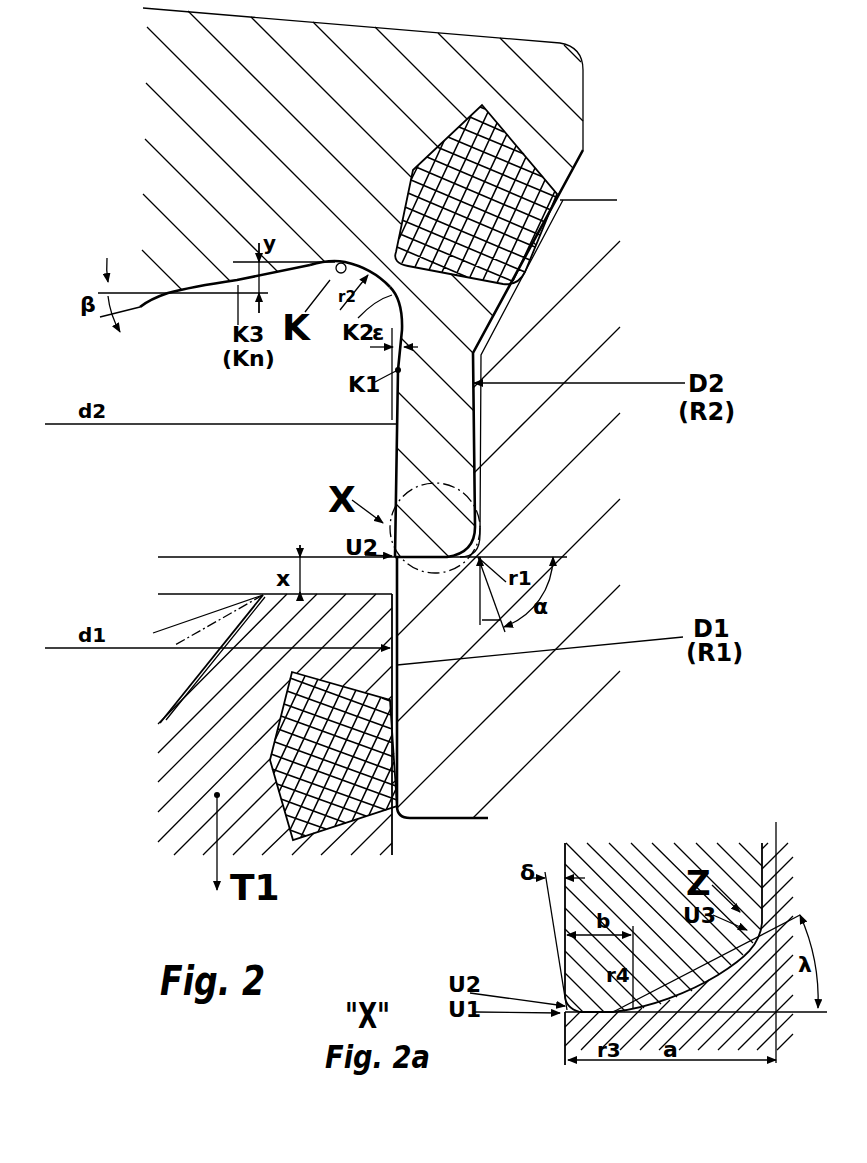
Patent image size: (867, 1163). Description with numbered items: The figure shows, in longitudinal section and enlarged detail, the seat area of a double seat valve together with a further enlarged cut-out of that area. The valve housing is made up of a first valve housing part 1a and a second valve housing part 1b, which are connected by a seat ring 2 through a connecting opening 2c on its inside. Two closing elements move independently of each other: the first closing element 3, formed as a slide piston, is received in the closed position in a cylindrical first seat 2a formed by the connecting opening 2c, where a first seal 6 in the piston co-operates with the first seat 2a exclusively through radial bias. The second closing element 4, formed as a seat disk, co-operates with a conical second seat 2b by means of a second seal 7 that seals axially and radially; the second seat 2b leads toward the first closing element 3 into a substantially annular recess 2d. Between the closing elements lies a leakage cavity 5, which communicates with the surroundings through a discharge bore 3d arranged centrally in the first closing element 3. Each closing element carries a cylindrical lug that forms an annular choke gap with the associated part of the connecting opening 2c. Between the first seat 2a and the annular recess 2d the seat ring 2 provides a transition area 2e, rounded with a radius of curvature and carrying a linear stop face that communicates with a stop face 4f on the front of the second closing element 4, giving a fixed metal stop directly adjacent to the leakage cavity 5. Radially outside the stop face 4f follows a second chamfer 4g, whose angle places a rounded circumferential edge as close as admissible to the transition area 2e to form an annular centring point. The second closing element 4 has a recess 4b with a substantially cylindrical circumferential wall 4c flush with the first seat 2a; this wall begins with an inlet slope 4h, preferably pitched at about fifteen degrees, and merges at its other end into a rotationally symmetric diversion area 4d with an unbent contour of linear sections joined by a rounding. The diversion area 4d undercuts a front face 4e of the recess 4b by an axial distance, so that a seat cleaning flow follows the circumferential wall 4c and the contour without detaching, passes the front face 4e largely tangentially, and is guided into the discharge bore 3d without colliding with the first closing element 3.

In FIG. 2, the first valve housing part 1a is at (430, 889).
In FIG. 2, the second valve housing part 1b is at (703, 74).
In FIG. 2, the seat ring 2 is at (512, 88).
In FIG. 2A, the seat ring 2 is at (658, 954).
In FIG. 2, the first seat 2a is at (400, 747).
In FIG. 2A, the first seat 2a is at (565, 1040).
In FIG. 2, the second seat 2b is at (550, 235).
In FIG. 2, the connecting opening 2c is at (198, 577).
In FIG. 2, the annular recess 2d is at (479, 443).
In FIG. 2, the transition area 2e is at (460, 595).
In FIG. 2, the first closing element 3 is at (240, 772).
In FIG. 2, the discharge bore 3d is at (160, 660).
In FIG. 2, the second closing element 4 is at (325, 128).
In FIG. 2A, the second closing element 4 is at (648, 880).
In FIG. 2, the recess 4b is at (190, 456).
In FIG. 2, the circumferential wall 4c is at (396, 468).
In FIG. 2A, the circumferential wall 4c is at (565, 905).
In FIG. 2, the diversion area 4d is at (335, 262).
In FIG. 2, the front face of the recess 4e is at (168, 296).
In FIG. 2, the stop face on the closing element side 4f is at (412, 654).
In FIG. 2A, the stop face on the closing element side 4f is at (613, 1012).
In FIG. 2A, the second chamfer 4g is at (715, 962).
In FIG. 2A, the inlet slope 4h is at (565, 993).
In FIG. 2, the leakage cavity 5 is at (115, 522).
In FIG. 2, the first seal 6 is at (330, 795).
In FIG. 2, the second seal 7 is at (470, 173).